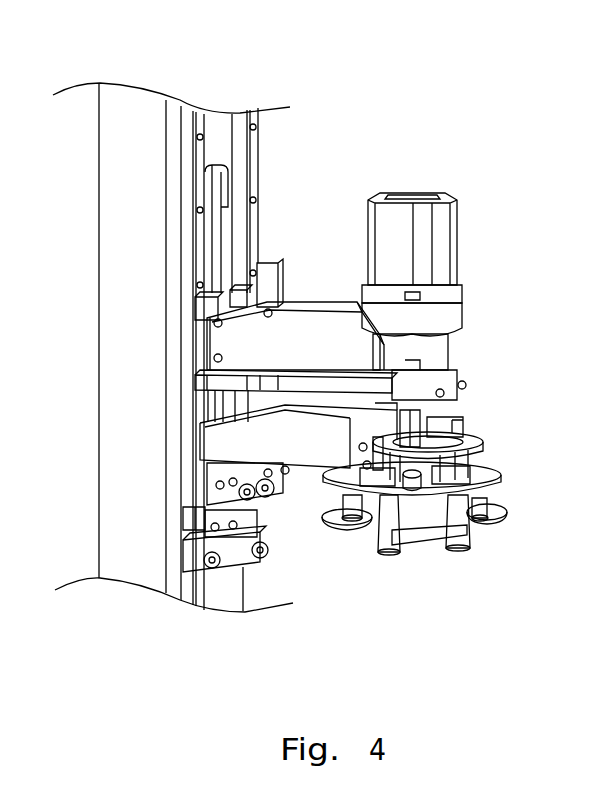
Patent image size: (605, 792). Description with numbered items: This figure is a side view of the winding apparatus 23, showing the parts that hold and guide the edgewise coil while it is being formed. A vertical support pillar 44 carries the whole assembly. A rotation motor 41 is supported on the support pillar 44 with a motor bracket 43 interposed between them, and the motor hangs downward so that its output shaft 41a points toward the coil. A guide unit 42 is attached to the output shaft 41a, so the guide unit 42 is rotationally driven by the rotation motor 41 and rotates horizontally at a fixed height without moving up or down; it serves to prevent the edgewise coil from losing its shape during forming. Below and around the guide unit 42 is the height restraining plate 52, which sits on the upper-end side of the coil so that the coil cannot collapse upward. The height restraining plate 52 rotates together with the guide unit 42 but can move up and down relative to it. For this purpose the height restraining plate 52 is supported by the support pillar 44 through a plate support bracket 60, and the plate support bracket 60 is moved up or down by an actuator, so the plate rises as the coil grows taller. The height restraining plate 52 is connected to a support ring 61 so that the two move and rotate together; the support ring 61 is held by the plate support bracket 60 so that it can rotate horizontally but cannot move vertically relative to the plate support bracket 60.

The winding apparatus 23 is at (430, 85).
The rotation motor 41 is at (445, 252).
The output shaft 41a is at (420, 430).
The guide unit 42 is at (495, 486).
The motor bracket 43 is at (325, 338).
The support pillar 44 is at (125, 336).
The height restraining plate 52 is at (424, 545).
The plate support bracket 60 is at (318, 460).
The support ring 61 is at (485, 445).